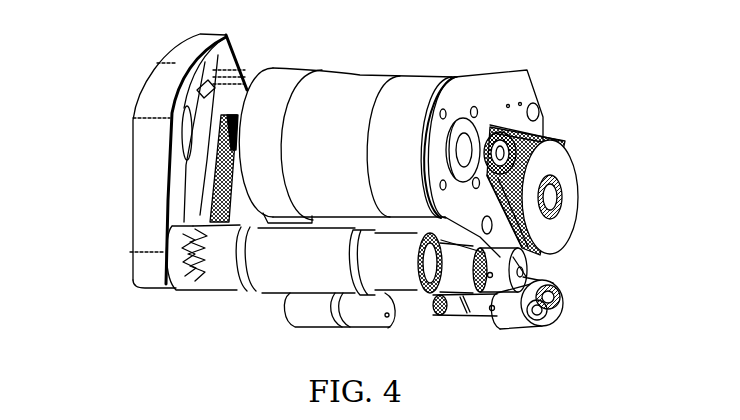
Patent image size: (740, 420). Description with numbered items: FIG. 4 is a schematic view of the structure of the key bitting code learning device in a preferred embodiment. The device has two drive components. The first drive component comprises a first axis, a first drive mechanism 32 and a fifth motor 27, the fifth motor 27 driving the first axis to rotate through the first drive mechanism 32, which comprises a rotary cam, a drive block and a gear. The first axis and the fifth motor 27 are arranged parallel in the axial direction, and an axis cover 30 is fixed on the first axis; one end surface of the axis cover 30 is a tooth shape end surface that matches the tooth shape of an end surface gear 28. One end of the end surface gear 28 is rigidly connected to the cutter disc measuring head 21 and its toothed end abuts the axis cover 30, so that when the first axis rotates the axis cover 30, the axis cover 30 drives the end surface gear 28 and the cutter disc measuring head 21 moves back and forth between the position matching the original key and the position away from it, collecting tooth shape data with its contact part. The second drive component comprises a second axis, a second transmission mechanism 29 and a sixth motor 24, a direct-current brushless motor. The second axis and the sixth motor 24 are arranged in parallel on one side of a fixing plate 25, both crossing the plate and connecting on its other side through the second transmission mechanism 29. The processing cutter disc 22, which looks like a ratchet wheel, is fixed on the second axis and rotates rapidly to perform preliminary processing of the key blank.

The cutter disc measuring head 21 is at (147, 210).
The processing cutter disc 22 is at (233, 172).
The sixth motor 24 is at (333, 98).
The fixing plate 25 is at (503, 80).
The fifth motor 27 is at (317, 310).
The end surface gear 28 is at (177, 267).
The second transmission mechanism 29 is at (556, 142).
The axis cover 30 is at (291, 276).
The first drive mechanism 32 is at (553, 283).